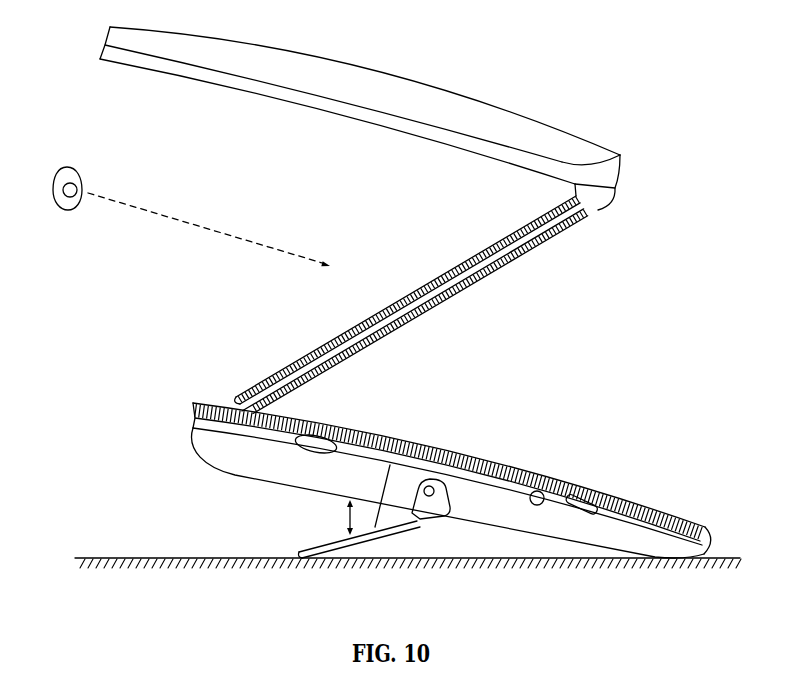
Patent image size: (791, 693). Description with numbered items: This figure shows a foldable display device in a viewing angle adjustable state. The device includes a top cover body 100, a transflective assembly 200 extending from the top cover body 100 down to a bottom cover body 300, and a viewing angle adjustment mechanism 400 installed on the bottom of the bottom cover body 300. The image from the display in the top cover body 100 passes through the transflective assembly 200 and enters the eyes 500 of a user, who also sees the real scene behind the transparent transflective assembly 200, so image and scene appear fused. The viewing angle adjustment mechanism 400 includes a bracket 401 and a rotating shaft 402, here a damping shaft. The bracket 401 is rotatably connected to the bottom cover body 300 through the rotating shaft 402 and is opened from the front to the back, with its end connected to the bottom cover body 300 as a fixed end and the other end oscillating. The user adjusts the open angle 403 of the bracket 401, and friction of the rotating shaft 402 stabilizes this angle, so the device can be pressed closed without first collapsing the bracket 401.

The top cover body 100 is at (515, 130).
The transflective assembly 200 is at (463, 262).
The bottom cover body 300 is at (643, 537).
The viewing angle adjustment mechanism 400 is at (304, 542).
The bracket 401 is at (390, 465).
The rotating shaft 402 is at (430, 479).
The open angle 403 is at (348, 514).
The eyes 500 is at (66, 175).